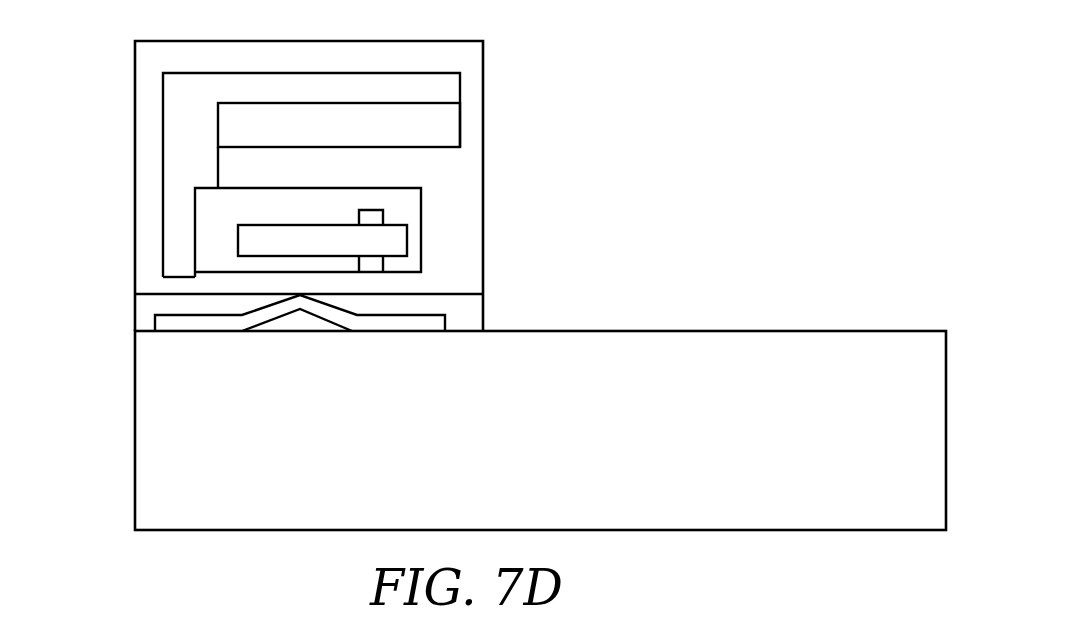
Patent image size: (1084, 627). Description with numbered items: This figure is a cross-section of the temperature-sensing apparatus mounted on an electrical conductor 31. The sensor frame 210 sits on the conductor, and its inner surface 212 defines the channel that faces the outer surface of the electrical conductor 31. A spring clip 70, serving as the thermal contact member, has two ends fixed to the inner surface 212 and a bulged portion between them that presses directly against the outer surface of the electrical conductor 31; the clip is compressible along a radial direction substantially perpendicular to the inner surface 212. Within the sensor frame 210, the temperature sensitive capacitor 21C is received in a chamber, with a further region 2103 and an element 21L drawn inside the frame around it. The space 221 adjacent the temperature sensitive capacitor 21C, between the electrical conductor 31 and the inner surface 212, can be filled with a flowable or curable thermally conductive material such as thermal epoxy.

The sensor frame 210 is at (127, 86).
The light emitting chip body 2103 is at (216, 220).
The inner surface 212 is at (157, 297).
The light emitting layer 21L is at (438, 121).
The temperature sensitive capacitor 21C is at (393, 242).
The space 221 is at (467, 307).
The spring clip 70 is at (322, 320).
The electrical conductor 31 is at (722, 350).